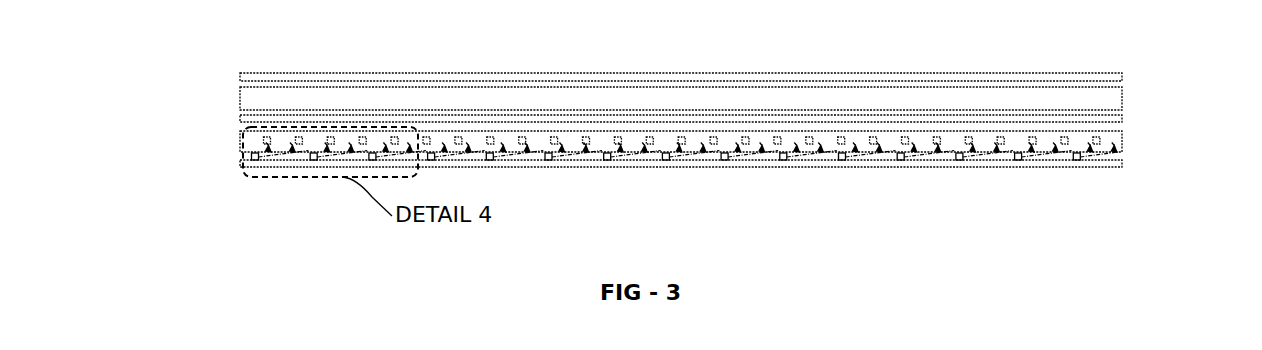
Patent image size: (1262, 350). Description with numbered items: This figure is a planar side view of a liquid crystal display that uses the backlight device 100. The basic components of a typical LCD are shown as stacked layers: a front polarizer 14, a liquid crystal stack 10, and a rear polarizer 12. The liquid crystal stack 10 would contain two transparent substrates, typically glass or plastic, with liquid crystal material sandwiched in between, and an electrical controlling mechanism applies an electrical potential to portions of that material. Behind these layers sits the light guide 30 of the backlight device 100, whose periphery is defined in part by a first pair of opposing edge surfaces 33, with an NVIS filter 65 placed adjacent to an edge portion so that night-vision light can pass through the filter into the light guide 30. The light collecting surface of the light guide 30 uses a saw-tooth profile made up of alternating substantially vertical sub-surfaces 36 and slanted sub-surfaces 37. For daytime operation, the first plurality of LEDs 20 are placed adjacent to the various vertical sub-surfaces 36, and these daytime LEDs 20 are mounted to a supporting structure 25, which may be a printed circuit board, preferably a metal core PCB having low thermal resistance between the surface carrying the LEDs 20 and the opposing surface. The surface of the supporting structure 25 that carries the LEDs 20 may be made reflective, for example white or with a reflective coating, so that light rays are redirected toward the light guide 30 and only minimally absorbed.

The backlight device 100 is at (216, 122).
The front polarizer 14 is at (1115, 77).
The liquid crystal stack 10 is at (1118, 91).
The rear polarizer 12 is at (1118, 118).
The first pair of opposing edge surfaces 33 is at (1120, 142).
The supporting structure 25 is at (1120, 163).
The light guide 30 is at (238, 143).
The substantially vertical sub-surfaces 36 is at (610, 153).
The slanted sub-surfaces 37 is at (507, 148).
The NVIS filter 65 is at (793, 142).
The first plurality of LEDs 20 is at (338, 157).